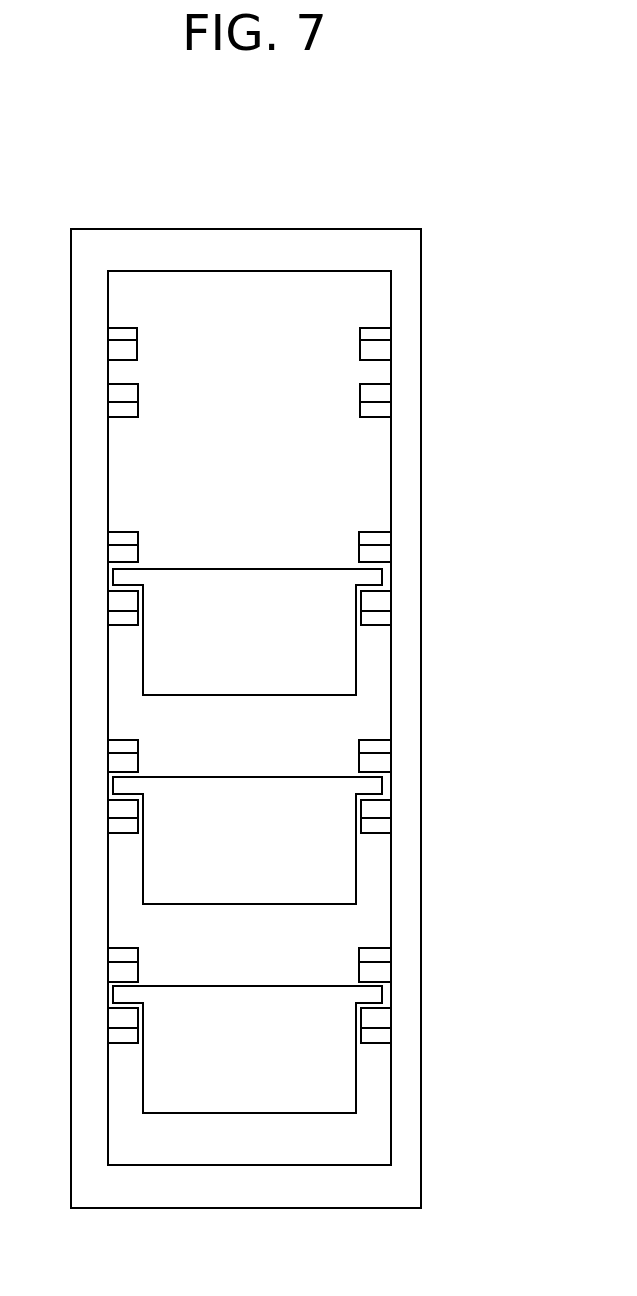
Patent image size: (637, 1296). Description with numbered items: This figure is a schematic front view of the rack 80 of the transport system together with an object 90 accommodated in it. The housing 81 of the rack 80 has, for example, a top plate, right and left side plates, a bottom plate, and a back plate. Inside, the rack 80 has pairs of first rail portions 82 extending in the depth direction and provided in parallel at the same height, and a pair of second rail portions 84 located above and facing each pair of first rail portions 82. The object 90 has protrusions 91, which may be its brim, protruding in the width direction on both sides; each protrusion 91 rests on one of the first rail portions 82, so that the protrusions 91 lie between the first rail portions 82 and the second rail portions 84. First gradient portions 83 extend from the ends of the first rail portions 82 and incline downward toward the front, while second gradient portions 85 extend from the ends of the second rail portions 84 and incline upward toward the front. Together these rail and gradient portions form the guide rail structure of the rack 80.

The rack 80 is at (103, 200).
The housing 81 is at (360, 229).
The first rail portions 82 is at (138, 390).
The first gradient portions 83 is at (138, 410).
The second rail portions 84 is at (137, 352).
The second gradient portions 85 is at (137, 328).
The object 90 is at (282, 569).
The protrusions 91 is at (382, 578).